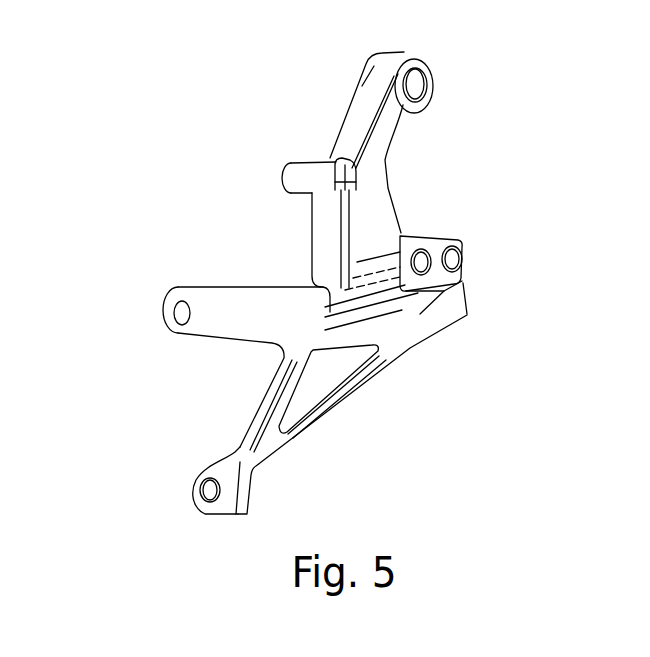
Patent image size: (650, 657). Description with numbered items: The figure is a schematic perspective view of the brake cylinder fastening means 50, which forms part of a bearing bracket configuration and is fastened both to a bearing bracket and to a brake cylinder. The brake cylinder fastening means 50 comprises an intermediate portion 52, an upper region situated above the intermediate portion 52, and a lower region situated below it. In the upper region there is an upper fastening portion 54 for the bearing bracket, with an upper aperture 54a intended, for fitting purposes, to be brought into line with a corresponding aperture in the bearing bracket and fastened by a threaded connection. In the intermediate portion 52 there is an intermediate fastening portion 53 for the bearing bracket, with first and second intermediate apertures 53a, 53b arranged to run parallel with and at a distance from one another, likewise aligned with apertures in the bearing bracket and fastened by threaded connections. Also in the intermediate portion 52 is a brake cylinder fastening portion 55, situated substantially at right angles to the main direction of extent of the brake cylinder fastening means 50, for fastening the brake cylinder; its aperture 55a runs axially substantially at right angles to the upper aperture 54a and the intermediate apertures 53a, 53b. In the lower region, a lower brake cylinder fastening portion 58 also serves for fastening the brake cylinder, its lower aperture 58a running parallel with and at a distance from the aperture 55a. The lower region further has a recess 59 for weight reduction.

The brake cylinder fastening means 50 is at (317, 295).
The intermediate portion 52 is at (408, 315).
The intermediate fastening portion 53 is at (503, 276).
The first intermediate aperture 53a is at (421, 265).
The second intermediate aperture 53b is at (454, 261).
The upper fastening portion 54 is at (480, 68).
The upper aperture 54a is at (418, 85).
The brake cylinder fastening portion 55 is at (175, 329).
The aperture 55a is at (186, 313).
The lower brake cylinder fastening portion 58 is at (145, 517).
The lower aperture 58a is at (212, 485).
The recess 59 is at (323, 371).